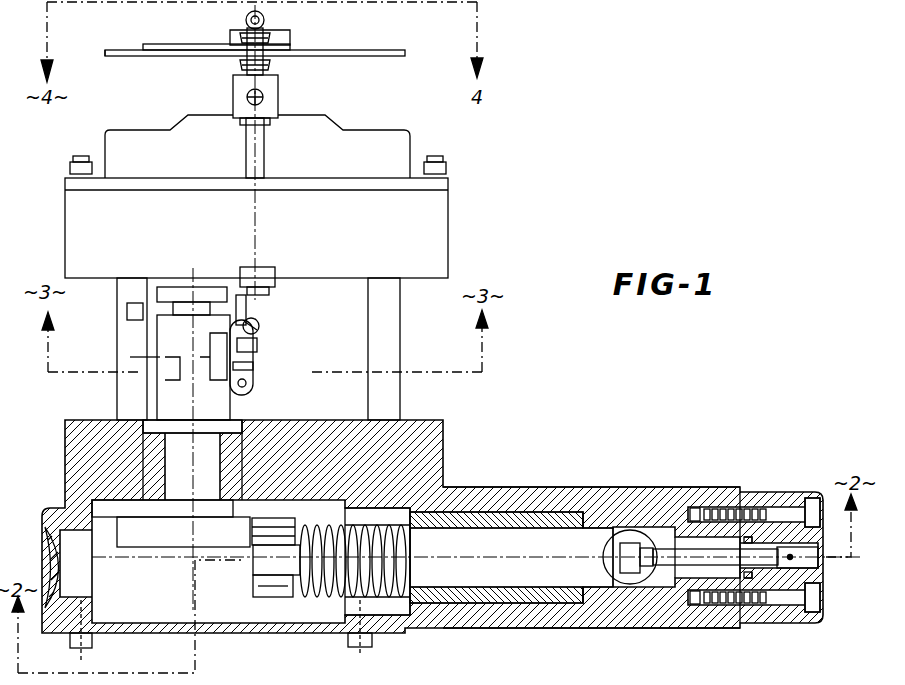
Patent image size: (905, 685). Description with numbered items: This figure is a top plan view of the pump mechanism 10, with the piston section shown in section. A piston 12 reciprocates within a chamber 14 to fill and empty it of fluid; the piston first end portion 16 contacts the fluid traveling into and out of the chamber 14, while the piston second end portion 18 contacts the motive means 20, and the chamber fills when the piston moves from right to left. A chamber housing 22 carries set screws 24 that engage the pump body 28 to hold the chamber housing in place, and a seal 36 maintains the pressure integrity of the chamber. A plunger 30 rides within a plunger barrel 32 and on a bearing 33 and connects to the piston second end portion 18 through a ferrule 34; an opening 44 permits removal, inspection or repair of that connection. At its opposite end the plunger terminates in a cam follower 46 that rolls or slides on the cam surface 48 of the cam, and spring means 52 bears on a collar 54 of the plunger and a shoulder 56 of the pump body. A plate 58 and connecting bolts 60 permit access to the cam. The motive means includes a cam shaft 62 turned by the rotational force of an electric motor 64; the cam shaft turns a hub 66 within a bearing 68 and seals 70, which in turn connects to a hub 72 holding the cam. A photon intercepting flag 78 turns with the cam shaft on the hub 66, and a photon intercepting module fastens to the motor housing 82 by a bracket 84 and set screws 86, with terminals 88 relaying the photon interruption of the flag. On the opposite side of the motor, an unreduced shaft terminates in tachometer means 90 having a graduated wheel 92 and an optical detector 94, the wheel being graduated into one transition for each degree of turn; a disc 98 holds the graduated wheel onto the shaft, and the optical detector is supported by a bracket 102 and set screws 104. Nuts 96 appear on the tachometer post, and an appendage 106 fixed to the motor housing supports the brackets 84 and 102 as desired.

The pump mechanism 10 is at (483, 452).
The piston 12 is at (706, 548).
The chamber 14 is at (788, 547).
The piston first end portion 16 is at (762, 553).
The piston second end portion 18 is at (658, 540).
The motive means 20 is at (250, 592).
The chamber housing 22 is at (775, 622).
The set screws 24 is at (812, 498).
The pump body 28 is at (548, 490).
The plunger 30 is at (497, 535).
The plunger barrel 32 is at (608, 600).
The bearing 33 is at (518, 603).
The ferrule 34 is at (628, 543).
The seal 36 is at (757, 615).
The opening 44 is at (652, 595).
The cam follower 46 is at (262, 560).
The cam surface 48 is at (152, 542).
The spring means 52 is at (330, 592).
The collar 54 is at (305, 585).
The shoulder 56 is at (340, 615).
The plate 58 is at (268, 628).
The connecting bolts 60 is at (93, 638).
The cam shaft 62 is at (182, 305).
The electric motor 64 is at (450, 215).
The hub 66 is at (235, 420).
The bearing 68 is at (275, 421).
The seals 70 is at (150, 520).
The hub 72 is at (180, 512).
The photon intercepting flag 78 is at (130, 357).
The motor housing 82 is at (448, 258).
The bracket 84 is at (248, 282).
The set screws 86 is at (268, 318).
The terminals 88 is at (258, 350).
The tachometer means 90 is at (305, 44).
The graduated wheel 92 is at (128, 57).
The optical detector 94 is at (266, 18).
The nuts 96 is at (240, 38).
The disc 98 is at (367, 50).
The bracket 102 is at (240, 97).
The set screws 104 is at (263, 97).
The appendage 106 is at (264, 158).